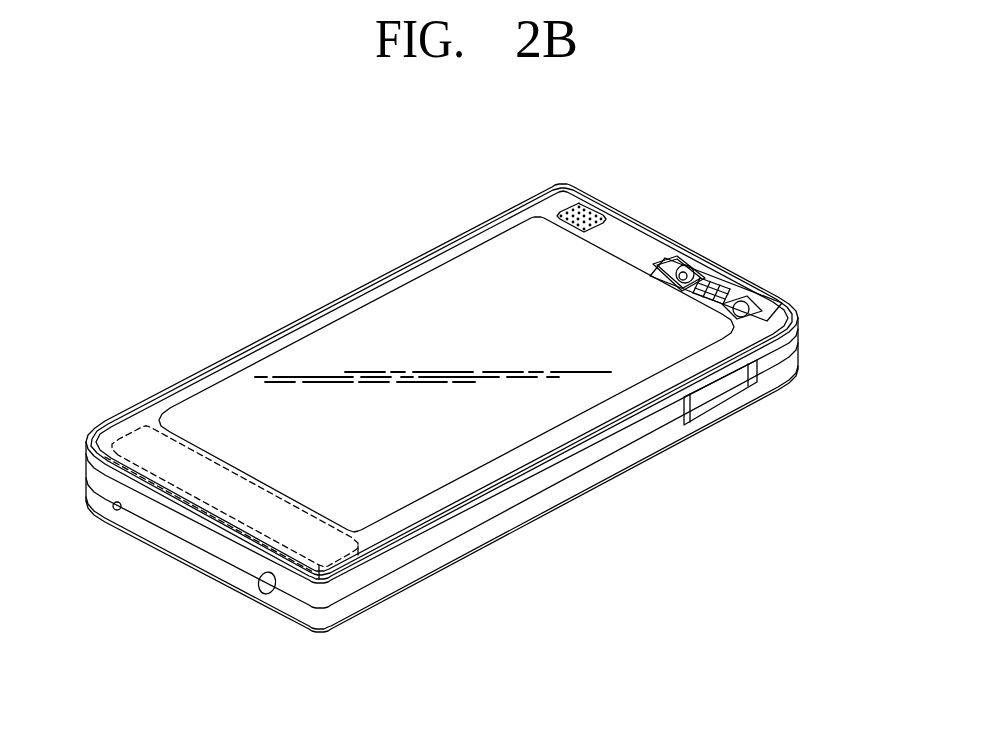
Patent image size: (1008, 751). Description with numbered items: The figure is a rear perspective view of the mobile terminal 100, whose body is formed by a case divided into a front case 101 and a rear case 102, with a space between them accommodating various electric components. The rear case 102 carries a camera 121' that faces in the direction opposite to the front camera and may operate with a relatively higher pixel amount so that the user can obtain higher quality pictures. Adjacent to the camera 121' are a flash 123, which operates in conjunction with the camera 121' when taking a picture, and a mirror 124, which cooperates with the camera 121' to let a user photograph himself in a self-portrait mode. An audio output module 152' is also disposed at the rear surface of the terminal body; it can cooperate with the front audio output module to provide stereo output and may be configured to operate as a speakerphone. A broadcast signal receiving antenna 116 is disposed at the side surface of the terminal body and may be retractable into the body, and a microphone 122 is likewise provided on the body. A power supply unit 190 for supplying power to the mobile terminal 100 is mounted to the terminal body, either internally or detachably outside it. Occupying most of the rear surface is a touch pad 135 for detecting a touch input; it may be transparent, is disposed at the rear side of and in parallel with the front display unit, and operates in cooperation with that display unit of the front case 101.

The mobile terminal 100 is at (404, 237).
The front case 101 is at (787, 360).
The rear case 102 is at (787, 340).
The broadcast signal receiving antenna 116 is at (265, 587).
The camera 121' is at (716, 266).
The microphone 122 is at (114, 509).
The flash 123 is at (724, 288).
The mirror 124 is at (746, 304).
The touch pad 135 is at (358, 327).
The audio output module 152' is at (620, 196).
The power supply unit 190 is at (127, 437).